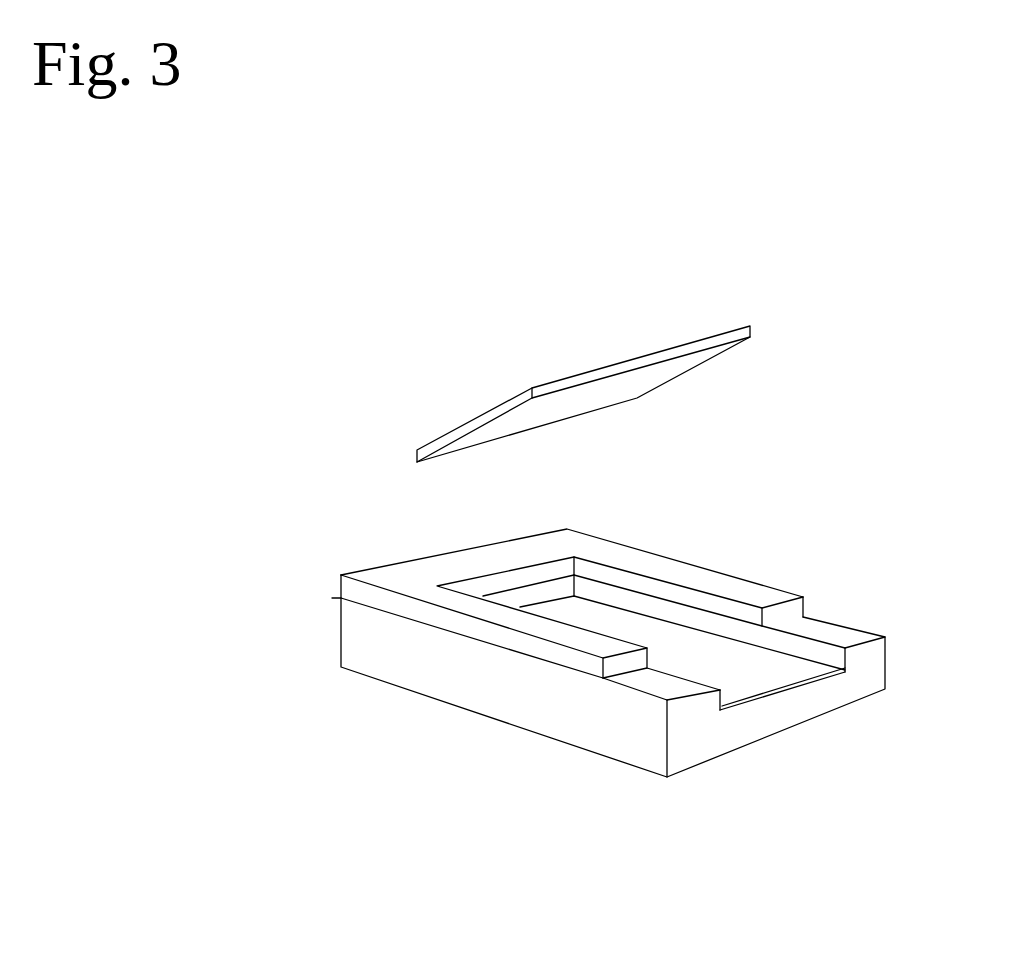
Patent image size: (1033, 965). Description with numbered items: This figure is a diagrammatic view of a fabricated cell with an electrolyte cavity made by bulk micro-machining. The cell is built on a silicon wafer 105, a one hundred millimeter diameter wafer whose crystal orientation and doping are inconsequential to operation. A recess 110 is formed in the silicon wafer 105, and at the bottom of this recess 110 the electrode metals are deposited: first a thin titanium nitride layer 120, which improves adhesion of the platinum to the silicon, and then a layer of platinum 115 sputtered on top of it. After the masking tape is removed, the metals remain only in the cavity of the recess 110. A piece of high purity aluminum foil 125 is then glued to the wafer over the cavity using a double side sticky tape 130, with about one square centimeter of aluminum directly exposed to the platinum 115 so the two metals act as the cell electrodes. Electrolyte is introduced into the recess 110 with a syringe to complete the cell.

The silicon wafer 105 is at (523, 725).
The recess 110 is at (556, 600).
The platinum 115 is at (827, 673).
The titanium nitride layer 120 is at (772, 695).
The aluminum foil 125 is at (713, 358).
The double side sticky tape 130 is at (648, 553).